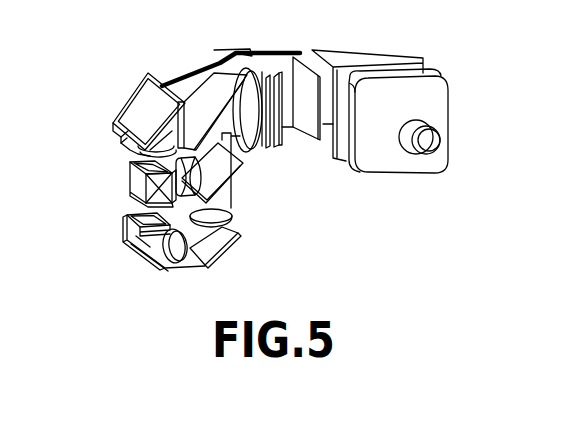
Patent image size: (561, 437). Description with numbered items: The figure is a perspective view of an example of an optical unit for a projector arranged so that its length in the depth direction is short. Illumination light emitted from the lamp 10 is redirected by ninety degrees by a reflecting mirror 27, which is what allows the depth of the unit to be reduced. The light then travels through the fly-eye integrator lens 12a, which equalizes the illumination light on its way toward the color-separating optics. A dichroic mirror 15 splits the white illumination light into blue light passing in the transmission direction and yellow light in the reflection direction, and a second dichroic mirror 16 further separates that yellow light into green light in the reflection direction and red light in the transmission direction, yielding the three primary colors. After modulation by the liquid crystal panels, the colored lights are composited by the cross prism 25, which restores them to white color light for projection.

The lamp 10 is at (427, 150).
The fly-eye integrator lens 12a is at (308, 133).
The dichroic mirror 15 is at (200, 104).
The dichroic mirror 16 is at (239, 180).
The cross prism 25 is at (138, 187).
The reflecting mirror 27 is at (365, 57).